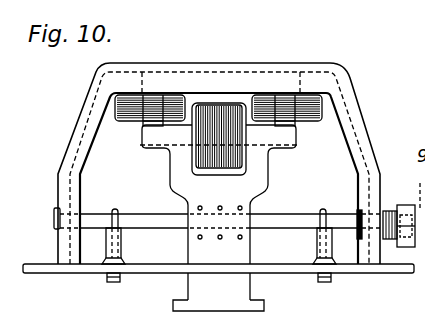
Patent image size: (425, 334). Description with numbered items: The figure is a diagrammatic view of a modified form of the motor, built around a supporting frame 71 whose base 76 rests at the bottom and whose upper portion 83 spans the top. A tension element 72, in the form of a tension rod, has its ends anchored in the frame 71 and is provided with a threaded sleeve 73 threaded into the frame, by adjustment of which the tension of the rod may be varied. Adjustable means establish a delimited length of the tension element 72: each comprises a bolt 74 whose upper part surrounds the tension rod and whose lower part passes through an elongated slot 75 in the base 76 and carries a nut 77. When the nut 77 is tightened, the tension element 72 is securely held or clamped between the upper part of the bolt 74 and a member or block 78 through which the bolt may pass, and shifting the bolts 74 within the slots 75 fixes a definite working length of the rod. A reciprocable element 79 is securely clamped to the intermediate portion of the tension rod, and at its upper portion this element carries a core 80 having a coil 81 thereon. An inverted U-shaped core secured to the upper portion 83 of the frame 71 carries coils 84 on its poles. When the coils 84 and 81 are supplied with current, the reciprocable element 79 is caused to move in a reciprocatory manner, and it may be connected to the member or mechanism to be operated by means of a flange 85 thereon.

The supporting frame 71 is at (72, 148).
The tension element 72 is at (155, 216).
The threaded sleeve 73 is at (388, 212).
The bolt 74 is at (115, 212).
The elongated slot 75 is at (102, 270).
The base 76 is at (258, 268).
The nut 77 is at (112, 283).
The member or block 78 is at (121, 245).
The reciprocable element 79 is at (198, 250).
The core 80 is at (245, 138).
The coil 81 is at (200, 153).
The upper portion of the frame 83 is at (308, 83).
The coils 84 is at (128, 112).
The flange 85 is at (173, 304).